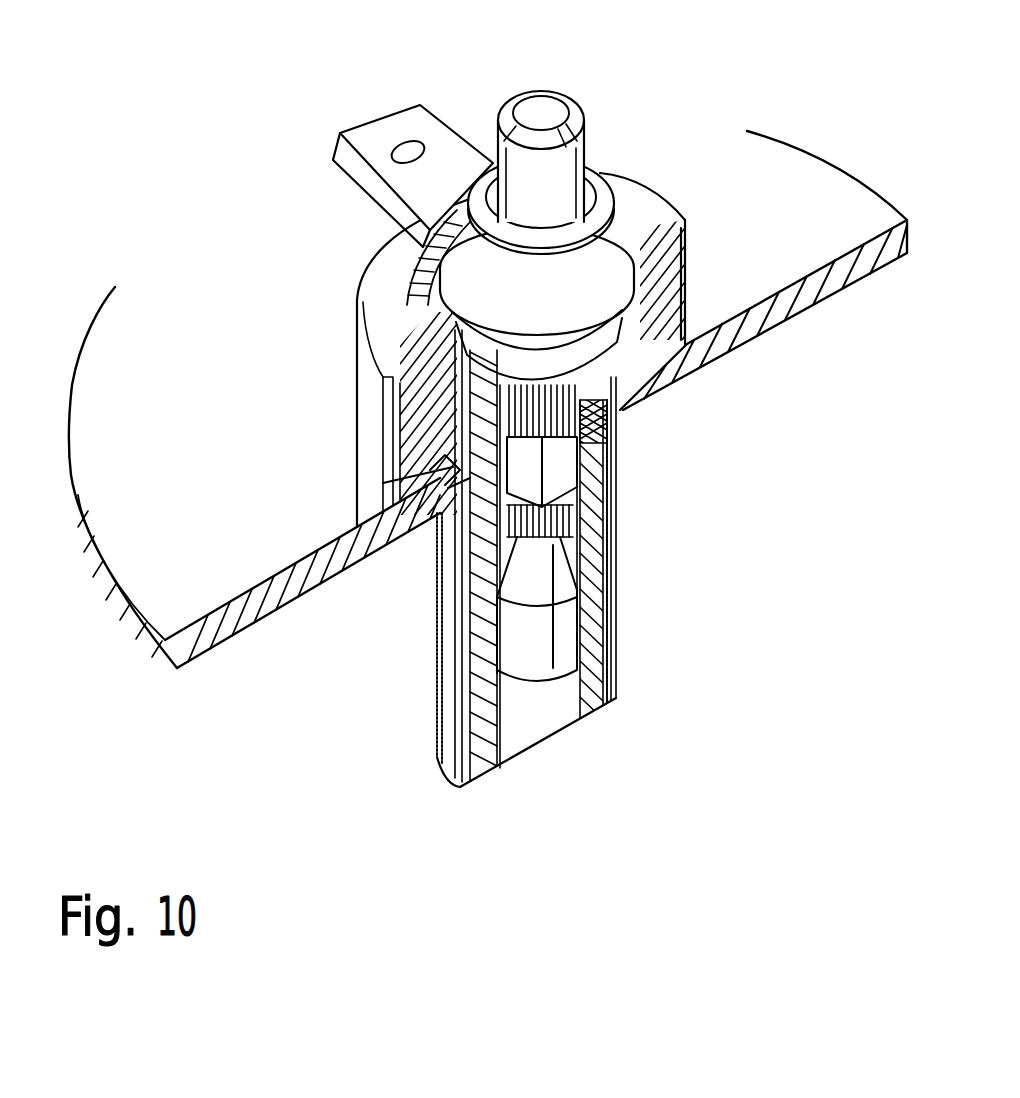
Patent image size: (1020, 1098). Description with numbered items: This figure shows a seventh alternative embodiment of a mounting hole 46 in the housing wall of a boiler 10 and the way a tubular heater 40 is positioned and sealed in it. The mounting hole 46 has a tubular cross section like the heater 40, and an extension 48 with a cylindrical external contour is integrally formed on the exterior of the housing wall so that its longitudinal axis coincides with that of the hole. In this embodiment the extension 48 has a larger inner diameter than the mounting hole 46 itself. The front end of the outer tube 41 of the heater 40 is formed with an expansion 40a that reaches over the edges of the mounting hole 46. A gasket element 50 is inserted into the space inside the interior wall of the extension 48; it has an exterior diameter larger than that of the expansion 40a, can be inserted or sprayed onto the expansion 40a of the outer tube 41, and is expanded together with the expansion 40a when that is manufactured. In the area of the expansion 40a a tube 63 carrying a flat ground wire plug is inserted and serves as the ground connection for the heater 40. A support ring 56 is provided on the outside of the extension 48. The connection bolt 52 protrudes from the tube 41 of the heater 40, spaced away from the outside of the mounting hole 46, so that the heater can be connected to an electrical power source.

The boiler 10 is at (80, 306).
The heater 40 is at (553, 632).
The expansion 40a is at (460, 465).
The outer tube 41 is at (467, 702).
The mounting hole 46 is at (618, 400).
The extension 48 is at (683, 275).
The gasket element 50 is at (403, 288).
The connection bolt 52 is at (547, 103).
The support ring 56 is at (353, 410).
The tube with flat ground wire plug 63 is at (388, 130).